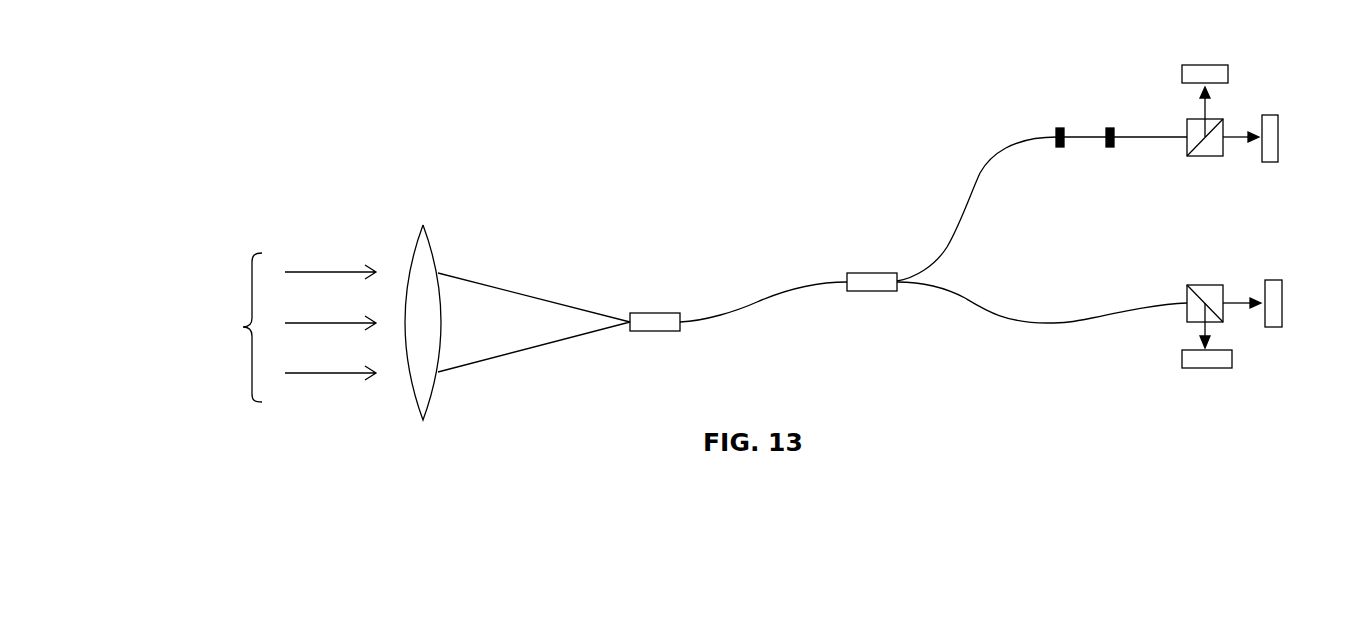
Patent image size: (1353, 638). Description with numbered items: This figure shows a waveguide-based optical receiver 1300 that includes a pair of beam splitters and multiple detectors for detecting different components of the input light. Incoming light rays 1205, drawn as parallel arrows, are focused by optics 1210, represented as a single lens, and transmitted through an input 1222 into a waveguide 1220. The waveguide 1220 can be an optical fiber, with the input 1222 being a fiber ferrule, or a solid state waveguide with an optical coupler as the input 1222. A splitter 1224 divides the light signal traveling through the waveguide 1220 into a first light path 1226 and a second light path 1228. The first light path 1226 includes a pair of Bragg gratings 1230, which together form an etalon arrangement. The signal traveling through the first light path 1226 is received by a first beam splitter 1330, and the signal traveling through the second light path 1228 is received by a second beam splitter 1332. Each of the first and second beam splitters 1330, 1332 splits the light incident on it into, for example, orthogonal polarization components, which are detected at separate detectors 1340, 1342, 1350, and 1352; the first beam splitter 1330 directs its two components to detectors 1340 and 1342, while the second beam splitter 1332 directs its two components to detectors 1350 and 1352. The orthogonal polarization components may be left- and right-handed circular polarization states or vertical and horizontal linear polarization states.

The optical receiver 1300 is at (258, 178).
The light rays 1205 is at (271, 327).
The optics 1210 is at (432, 243).
The input 1222 is at (653, 313).
The waveguide 1220 is at (767, 300).
The splitter 1224 is at (863, 272).
The first light path 1226 is at (977, 183).
The second light path 1228 is at (1060, 323).
The Bragg gratings 1230 is at (1110, 147).
The first beam splitter 1330 is at (1205, 157).
The detector 1340 is at (1182, 73).
The detector 1342 is at (1270, 162).
The second beam splitter 1332 is at (1213, 285).
The detector 1350 is at (1207, 368).
The detector 1352 is at (1273, 327).